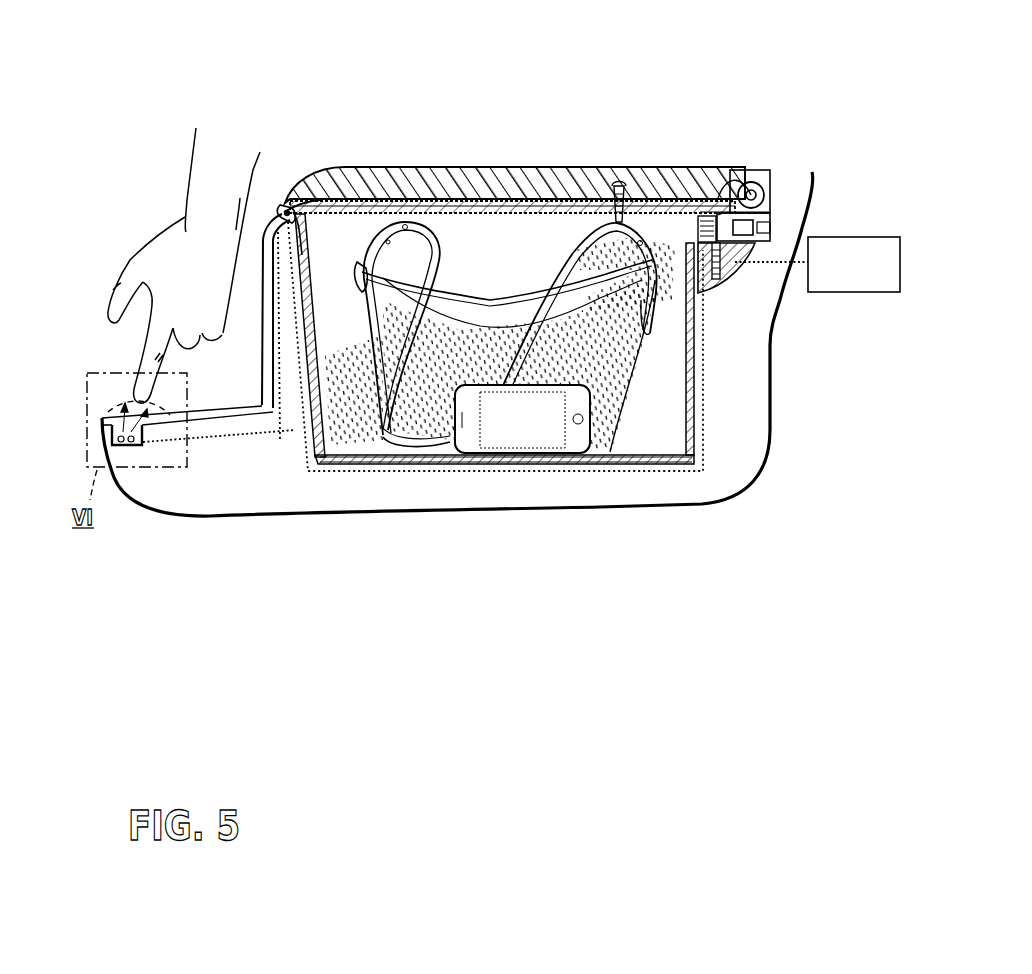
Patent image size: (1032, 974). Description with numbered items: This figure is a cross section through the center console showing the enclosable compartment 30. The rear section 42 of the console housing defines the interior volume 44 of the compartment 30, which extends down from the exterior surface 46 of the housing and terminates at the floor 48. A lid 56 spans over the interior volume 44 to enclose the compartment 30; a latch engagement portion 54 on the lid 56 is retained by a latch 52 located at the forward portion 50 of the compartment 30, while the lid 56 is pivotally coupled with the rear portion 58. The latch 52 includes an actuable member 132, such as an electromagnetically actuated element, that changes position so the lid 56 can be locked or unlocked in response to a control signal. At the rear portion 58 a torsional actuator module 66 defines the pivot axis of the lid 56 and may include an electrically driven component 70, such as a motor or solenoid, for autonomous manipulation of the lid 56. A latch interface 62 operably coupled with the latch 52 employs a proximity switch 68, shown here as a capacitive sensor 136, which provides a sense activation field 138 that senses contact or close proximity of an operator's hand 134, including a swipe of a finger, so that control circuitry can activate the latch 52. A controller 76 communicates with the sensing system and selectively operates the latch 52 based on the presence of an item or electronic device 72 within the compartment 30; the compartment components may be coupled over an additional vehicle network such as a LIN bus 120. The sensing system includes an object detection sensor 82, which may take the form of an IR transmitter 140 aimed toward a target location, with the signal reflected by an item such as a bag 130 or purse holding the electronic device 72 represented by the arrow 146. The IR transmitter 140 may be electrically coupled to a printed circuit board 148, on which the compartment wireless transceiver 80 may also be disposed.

The compartment 30 is at (532, 240).
The rear section 42 is at (608, 140).
The interior volume 44 is at (355, 247).
The exterior surface 46 is at (261, 308).
The floor 48 is at (360, 466).
The forward portion 50 is at (283, 205).
The latch 52 is at (300, 225).
The latch engagement portion 54 is at (296, 199).
The lid 56 is at (470, 167).
The rear portion 58 is at (778, 210).
The latch interface 62 is at (108, 415).
The torsional actuator module 66 is at (771, 232).
The proximity switch 68 is at (133, 446).
The electrically driven component 70 is at (755, 190).
The electronic device 72 is at (534, 432).
The controller 76 is at (866, 292).
The compartment wireless transceiver 80 is at (760, 268).
The object detection sensor 82 is at (687, 200).
The LIN bus 120 is at (304, 462).
The bag 130 is at (612, 396).
The actuable member 132 is at (325, 205).
The hand 134 is at (148, 384).
The capacitive sensor 136 is at (124, 447).
The sense activation field 138 is at (109, 410).
The IR transmitter 140 is at (716, 212).
The reflected IR signal 146 is at (694, 232).
The printed circuit board 148 is at (720, 214).